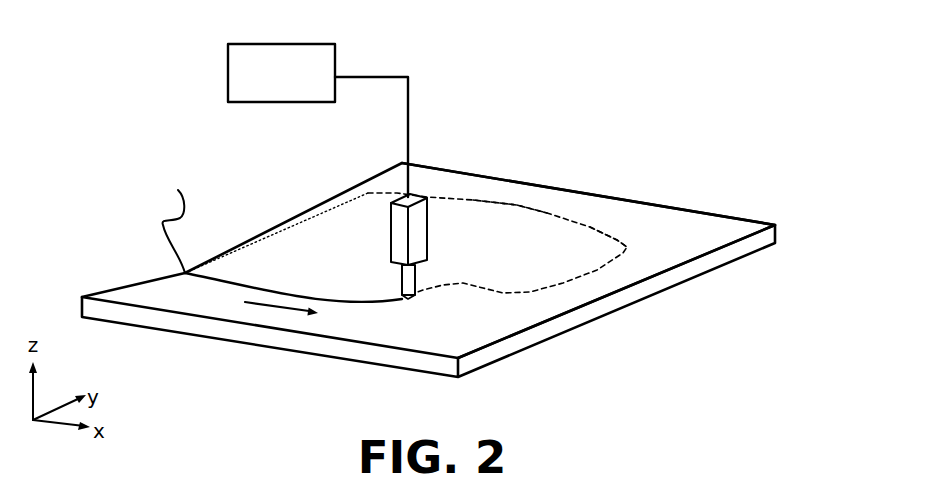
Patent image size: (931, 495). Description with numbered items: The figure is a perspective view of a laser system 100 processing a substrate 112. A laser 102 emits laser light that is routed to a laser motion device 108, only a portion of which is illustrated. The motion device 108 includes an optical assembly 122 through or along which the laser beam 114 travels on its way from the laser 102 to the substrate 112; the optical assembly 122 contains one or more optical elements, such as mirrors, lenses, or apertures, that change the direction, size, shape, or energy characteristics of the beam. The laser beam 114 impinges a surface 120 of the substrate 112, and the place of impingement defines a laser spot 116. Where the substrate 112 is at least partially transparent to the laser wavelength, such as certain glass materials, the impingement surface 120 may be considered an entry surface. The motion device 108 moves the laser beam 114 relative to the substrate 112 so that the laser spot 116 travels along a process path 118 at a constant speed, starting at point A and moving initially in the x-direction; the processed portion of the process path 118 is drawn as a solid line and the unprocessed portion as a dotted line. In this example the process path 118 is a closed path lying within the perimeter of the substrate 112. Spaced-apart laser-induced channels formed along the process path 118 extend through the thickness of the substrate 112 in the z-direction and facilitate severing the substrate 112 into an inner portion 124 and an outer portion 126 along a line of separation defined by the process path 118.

The laser system 100 is at (428, 214).
The laser 102 is at (230, 103).
The laser motion device 108 is at (429, 190).
The substrate 112 is at (620, 308).
The laser beam 114 is at (395, 280).
The laser spot 116 is at (410, 298).
The process path 118 is at (525, 206).
The surface 120 is at (682, 233).
The optical assembly 122 is at (397, 217).
The inner portion 124 is at (572, 232).
The outer portion 126 is at (616, 210).